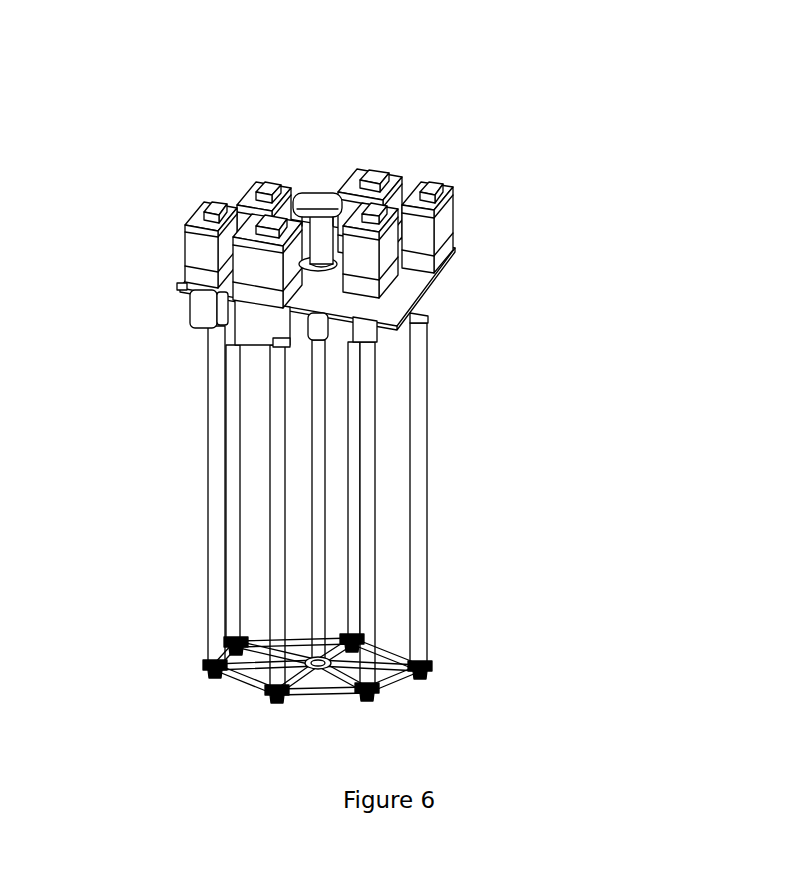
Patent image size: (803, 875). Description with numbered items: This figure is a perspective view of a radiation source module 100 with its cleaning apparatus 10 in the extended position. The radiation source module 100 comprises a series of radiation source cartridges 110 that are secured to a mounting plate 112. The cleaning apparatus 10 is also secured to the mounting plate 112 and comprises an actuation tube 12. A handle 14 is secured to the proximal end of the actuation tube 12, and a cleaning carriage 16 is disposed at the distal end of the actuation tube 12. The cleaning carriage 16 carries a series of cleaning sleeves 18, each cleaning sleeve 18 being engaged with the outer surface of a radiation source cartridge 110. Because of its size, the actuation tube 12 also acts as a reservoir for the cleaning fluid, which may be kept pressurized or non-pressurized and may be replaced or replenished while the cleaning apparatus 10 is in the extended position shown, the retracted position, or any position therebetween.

The cleaning apparatus 10 is at (293, 398).
The actuation tube 12 is at (320, 413).
The handle 14 is at (305, 193).
The cleaning carriage 16 is at (397, 677).
The cleaning sleeve 18 is at (200, 663).
The radiation source module 100 is at (365, 398).
The radiation source cartridge 110 is at (185, 213).
The mounting plate 112 is at (393, 307).